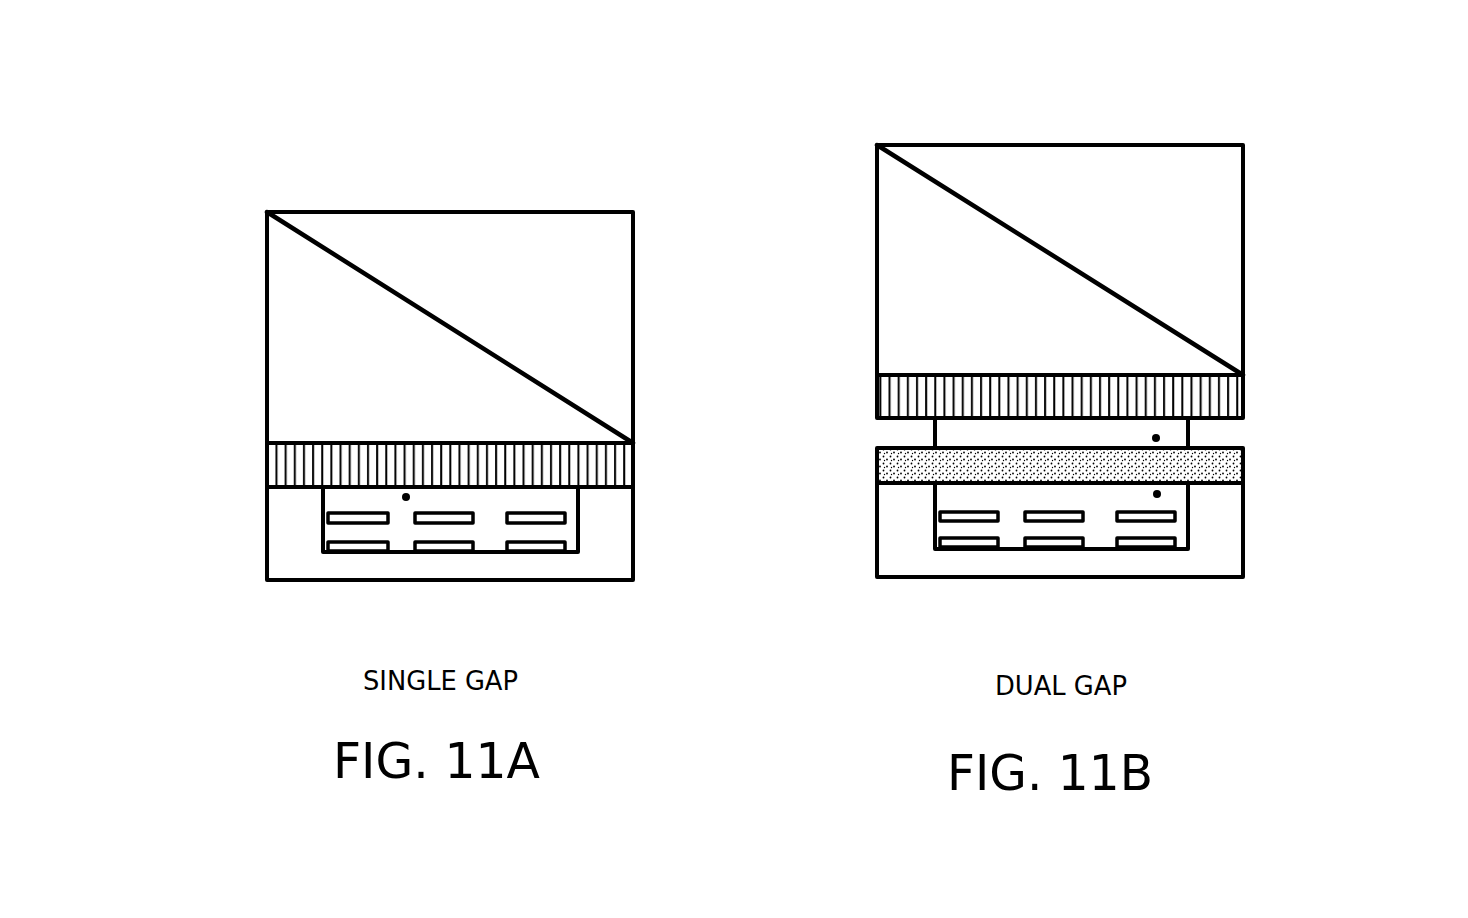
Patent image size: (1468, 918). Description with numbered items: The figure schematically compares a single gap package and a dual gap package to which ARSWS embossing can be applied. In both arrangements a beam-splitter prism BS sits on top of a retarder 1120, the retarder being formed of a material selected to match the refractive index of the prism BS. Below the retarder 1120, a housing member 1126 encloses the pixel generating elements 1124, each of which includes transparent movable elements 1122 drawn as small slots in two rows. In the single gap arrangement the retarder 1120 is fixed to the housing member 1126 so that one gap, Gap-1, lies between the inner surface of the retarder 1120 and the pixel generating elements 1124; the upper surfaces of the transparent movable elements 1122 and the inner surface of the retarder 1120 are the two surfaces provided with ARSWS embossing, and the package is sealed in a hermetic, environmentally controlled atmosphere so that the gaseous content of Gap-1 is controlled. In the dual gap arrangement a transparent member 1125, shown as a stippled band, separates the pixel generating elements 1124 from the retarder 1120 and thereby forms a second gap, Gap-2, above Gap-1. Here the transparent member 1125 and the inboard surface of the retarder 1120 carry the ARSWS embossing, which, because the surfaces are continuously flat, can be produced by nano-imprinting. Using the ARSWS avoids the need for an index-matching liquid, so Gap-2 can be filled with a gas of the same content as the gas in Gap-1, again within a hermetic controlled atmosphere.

In FIG. 11A, the beam-splitter prism BS is at (432, 211).
In FIG. 11B, the beam-splitter prism BS is at (980, 142).
In FIG. 11A, the retarder 1120 is at (367, 458).
In FIG. 11B, the retarder 1120 is at (930, 397).
In FIG. 11A, the transparent movable elements 1122 is at (500, 514).
In FIG. 11B, the transparent movable elements 1122 is at (1113, 513).
In FIG. 11A, the pixel generating elements 1124 is at (520, 553).
In FIG. 11B, the pixel generating elements 1124 is at (1123, 551).
In FIG. 11B, the transparent member 1125 is at (1230, 468).
In FIG. 11A, the housing member 1126 is at (273, 537).
In FIG. 11B, the housing member 1126 is at (900, 543).
In FIG. 11A, the ARSWS embossing ARSWS is at (367, 490).
In FIG. 11B, the ARSWS embossing ARSWS is at (1033, 445).
In FIG. 11A, the first gap Gap-1 is at (406, 500).
In FIG. 11B, the first gap Gap-1 is at (1157, 494).
In FIG. 11B, the second gap Gap-2 is at (1156, 438).